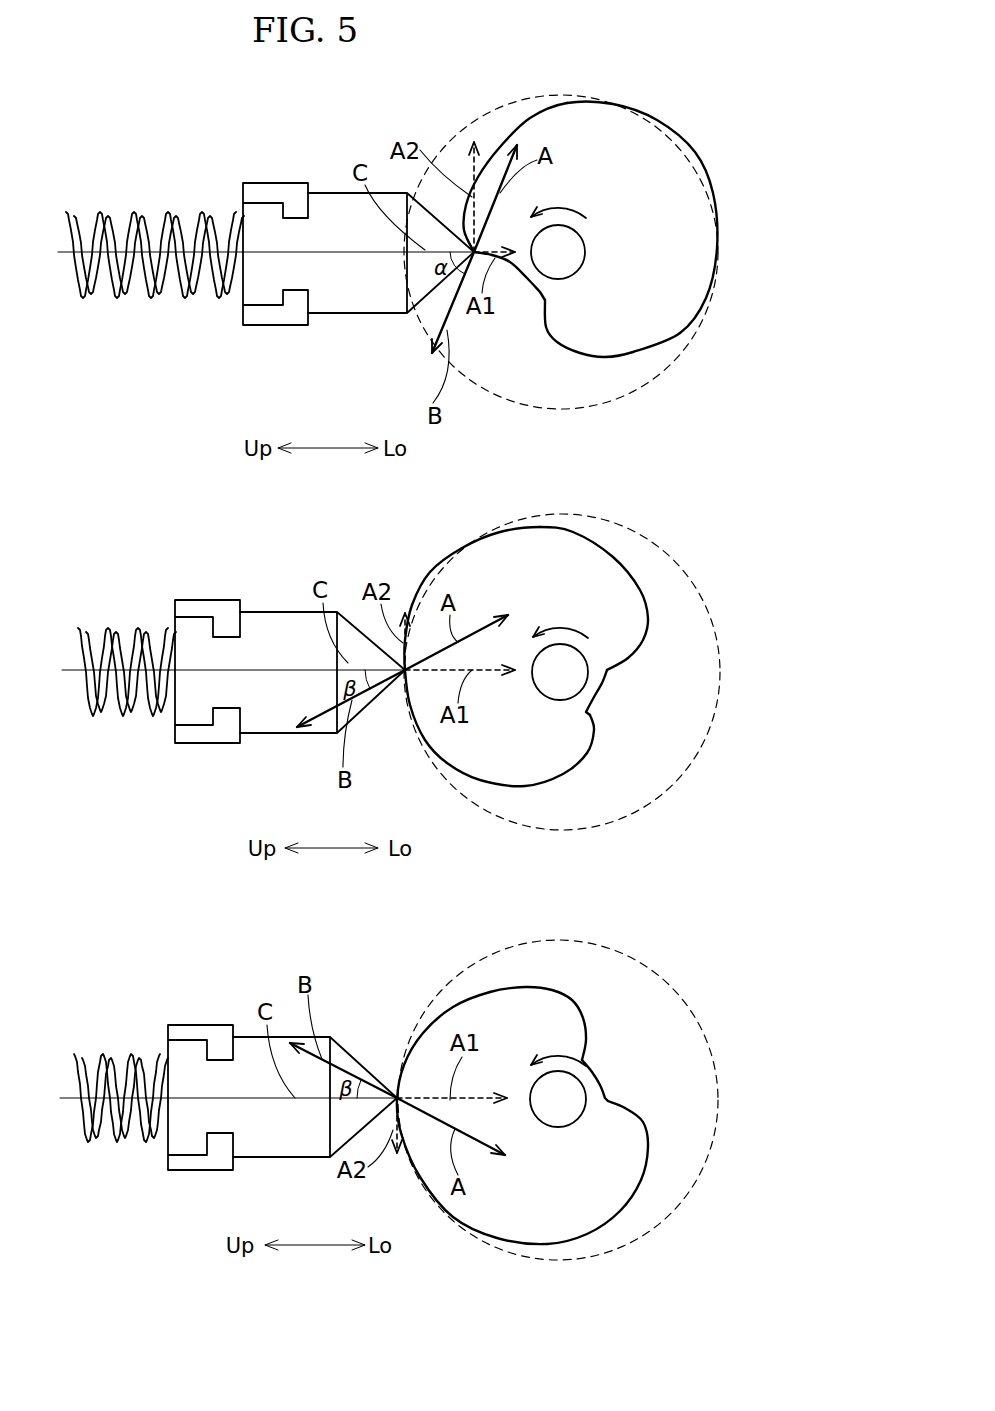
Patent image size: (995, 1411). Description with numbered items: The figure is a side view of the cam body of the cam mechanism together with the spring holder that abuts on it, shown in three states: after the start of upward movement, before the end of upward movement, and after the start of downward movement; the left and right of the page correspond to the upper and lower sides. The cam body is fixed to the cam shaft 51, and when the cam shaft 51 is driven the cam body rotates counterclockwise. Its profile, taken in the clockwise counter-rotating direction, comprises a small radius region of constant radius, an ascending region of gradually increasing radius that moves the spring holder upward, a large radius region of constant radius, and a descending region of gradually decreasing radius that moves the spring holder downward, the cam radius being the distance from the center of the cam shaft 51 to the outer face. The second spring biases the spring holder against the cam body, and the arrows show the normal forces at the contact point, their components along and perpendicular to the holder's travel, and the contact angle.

The cam shaft 51 is at (585, 252).